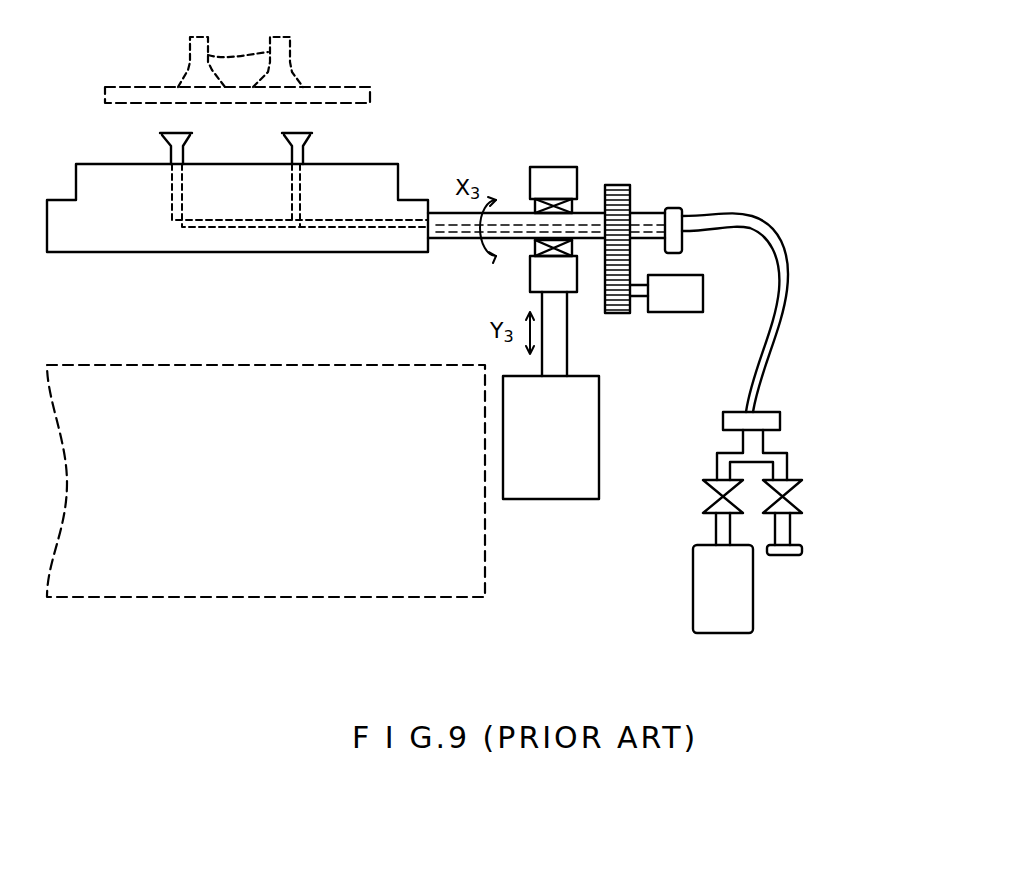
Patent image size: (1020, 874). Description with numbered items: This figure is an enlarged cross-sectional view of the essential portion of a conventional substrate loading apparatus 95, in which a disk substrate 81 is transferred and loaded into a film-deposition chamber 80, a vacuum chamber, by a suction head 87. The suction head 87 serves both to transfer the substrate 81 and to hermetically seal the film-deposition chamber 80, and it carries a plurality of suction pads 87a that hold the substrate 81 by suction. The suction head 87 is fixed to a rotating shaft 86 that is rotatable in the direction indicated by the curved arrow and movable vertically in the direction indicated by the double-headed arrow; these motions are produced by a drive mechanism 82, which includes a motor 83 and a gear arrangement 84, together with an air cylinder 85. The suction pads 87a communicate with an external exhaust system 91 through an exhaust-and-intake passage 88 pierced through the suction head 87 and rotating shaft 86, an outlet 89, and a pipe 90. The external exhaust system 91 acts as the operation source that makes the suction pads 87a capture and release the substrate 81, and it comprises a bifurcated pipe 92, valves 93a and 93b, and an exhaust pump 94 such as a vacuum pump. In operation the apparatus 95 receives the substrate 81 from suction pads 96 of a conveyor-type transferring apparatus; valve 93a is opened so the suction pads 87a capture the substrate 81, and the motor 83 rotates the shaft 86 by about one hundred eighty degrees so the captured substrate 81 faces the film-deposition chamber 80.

The film-deposition chamber 80 is at (272, 560).
The disk substrate 81 is at (351, 88).
The drive mechanism 82 is at (604, 170).
The motor 83 is at (680, 296).
The gear arrangement 84 is at (600, 280).
The air cylinder 85 is at (562, 490).
The rotating shaft 86 is at (452, 240).
The suction head 87 is at (135, 234).
The suction pads 87a is at (286, 140).
The exhaust-and-intake passage 88 is at (278, 228).
The outlet 89 is at (672, 210).
The pipe 90 is at (750, 212).
The external exhaust system 91 is at (809, 414).
The bifurcated pipe 92 is at (782, 462).
The valve 93a is at (705, 497).
The valve 93b is at (804, 497).
The exhaust pump 94 is at (706, 606).
The substrate loading apparatus 95 is at (643, 152).
The suction pads 96 is at (214, 55).